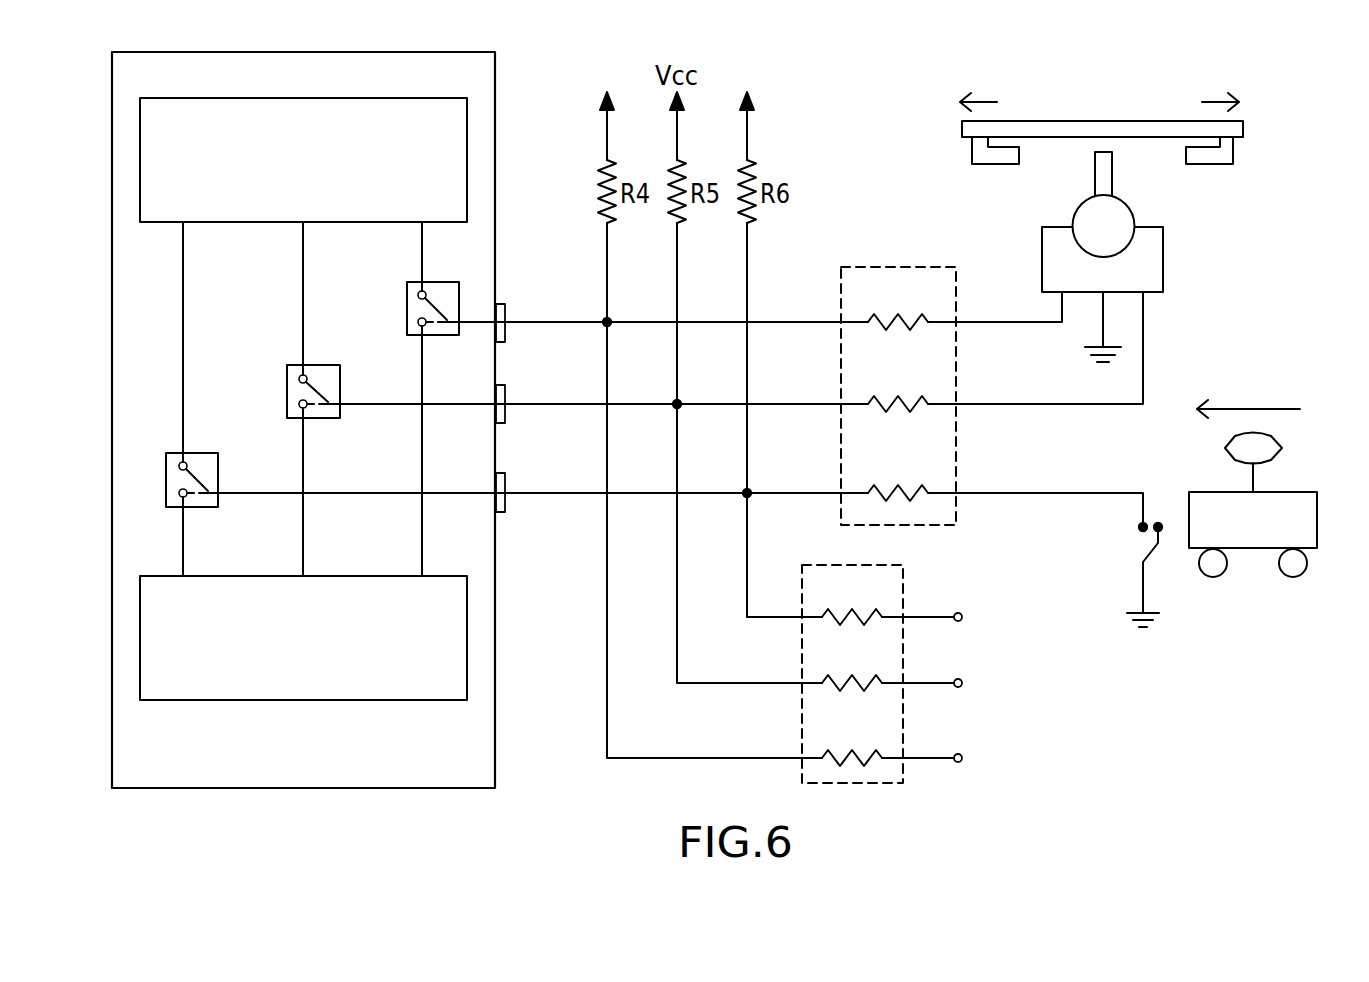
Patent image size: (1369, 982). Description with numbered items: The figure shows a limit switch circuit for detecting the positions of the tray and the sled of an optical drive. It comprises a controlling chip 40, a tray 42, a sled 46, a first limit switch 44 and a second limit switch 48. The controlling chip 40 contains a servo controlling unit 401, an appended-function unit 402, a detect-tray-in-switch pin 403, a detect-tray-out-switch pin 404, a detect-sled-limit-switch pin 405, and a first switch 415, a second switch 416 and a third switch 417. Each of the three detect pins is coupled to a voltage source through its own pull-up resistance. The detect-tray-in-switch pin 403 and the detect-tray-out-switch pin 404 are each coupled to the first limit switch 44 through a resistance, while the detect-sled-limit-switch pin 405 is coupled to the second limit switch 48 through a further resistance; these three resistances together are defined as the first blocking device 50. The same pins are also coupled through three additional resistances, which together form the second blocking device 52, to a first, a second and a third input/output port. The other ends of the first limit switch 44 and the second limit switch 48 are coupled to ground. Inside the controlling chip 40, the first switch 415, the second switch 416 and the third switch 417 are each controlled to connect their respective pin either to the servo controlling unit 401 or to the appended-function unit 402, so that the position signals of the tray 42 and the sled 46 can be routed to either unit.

The controlling chip 40 is at (475, 750).
The servo controlling unit 401 is at (402, 112).
The appended-function unit 402 is at (460, 622).
The detect-tray-in-switch pin 403 is at (498, 315).
The detect-tray-out-switch pin 404 is at (498, 398).
The detect-sled-limit-switch pin 405 is at (498, 487).
The first switch 415 is at (445, 290).
The second switch 416 is at (317, 373).
The third switch 417 is at (195, 462).
The tray 42 is at (1120, 127).
The first limit switch 44 is at (1153, 267).
The sled 46 is at (1283, 505).
The second limit switch 48 is at (1135, 542).
The first blocking device 50 is at (913, 267).
The second blocking device 52 is at (903, 590).